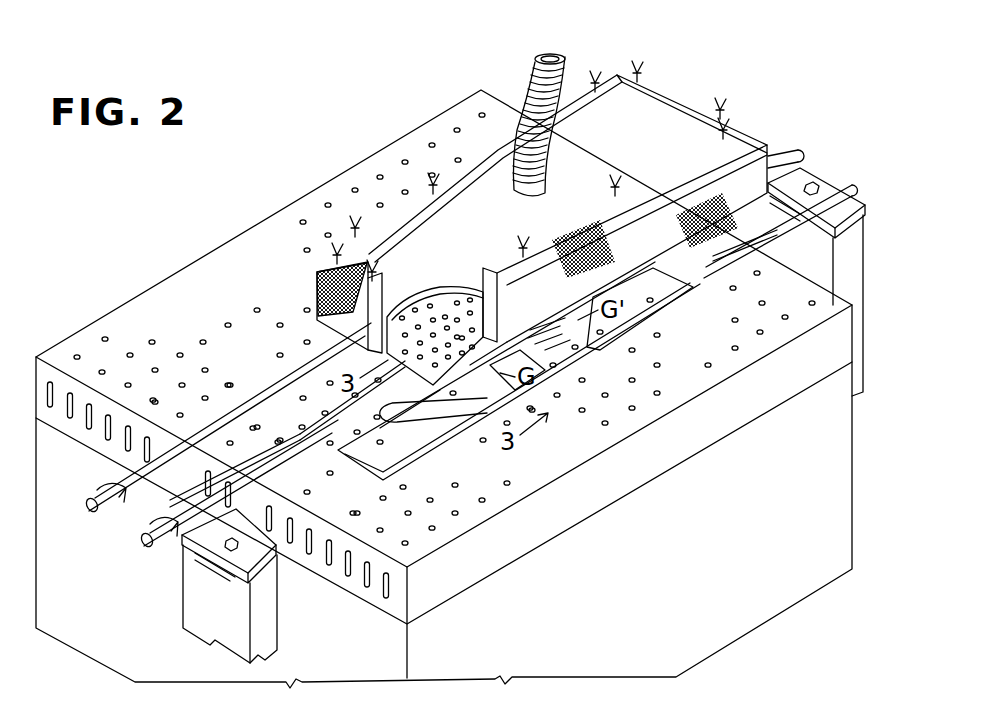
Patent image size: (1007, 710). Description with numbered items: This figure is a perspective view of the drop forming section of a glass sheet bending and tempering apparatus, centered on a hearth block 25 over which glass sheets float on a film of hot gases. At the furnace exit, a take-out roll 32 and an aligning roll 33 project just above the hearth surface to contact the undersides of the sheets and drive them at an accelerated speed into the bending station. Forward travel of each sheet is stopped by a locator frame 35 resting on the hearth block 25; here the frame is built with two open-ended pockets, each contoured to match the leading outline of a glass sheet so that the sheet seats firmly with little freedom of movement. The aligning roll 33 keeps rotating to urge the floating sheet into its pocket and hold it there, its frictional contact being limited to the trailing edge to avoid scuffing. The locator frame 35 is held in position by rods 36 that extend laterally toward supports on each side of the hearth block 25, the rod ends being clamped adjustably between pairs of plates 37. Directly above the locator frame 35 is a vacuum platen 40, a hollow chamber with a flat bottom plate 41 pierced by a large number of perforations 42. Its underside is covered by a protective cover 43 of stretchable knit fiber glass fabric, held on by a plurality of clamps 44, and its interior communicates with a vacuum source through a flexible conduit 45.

The hearth block 25 is at (450, 594).
The take-out roll 32 is at (85, 507).
The aligning roll 33 is at (139, 544).
The locator frame 35 is at (400, 480).
The rods 36 is at (333, 490).
The plates 37 is at (243, 572).
The vacuum platen 40 is at (660, 120).
The flat bottom plate 41 is at (422, 290).
The perforations 42 is at (455, 300).
The protective cover 43 is at (316, 290).
The clamps 44 is at (600, 192).
The flexible conduit 45 is at (560, 63).